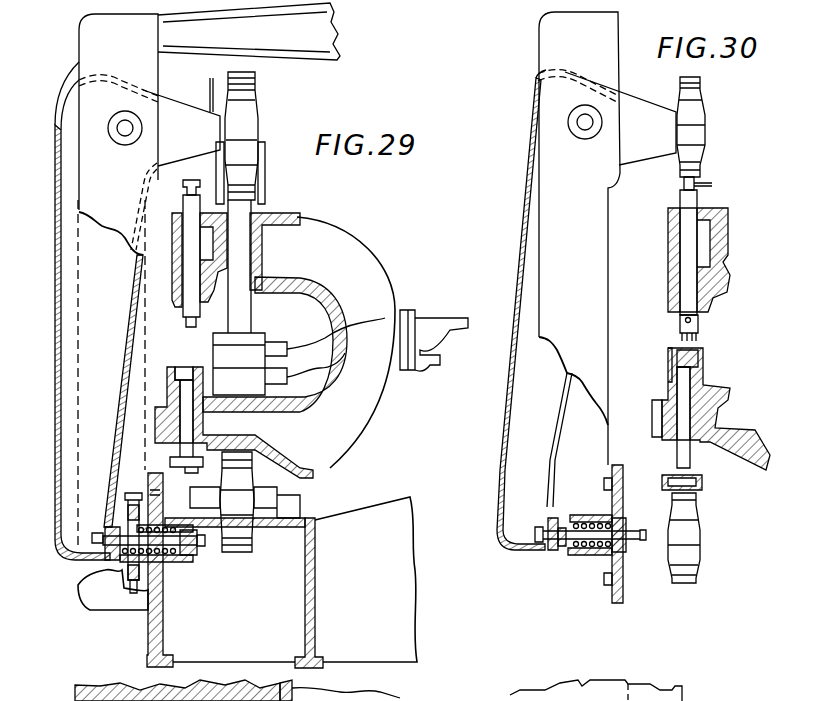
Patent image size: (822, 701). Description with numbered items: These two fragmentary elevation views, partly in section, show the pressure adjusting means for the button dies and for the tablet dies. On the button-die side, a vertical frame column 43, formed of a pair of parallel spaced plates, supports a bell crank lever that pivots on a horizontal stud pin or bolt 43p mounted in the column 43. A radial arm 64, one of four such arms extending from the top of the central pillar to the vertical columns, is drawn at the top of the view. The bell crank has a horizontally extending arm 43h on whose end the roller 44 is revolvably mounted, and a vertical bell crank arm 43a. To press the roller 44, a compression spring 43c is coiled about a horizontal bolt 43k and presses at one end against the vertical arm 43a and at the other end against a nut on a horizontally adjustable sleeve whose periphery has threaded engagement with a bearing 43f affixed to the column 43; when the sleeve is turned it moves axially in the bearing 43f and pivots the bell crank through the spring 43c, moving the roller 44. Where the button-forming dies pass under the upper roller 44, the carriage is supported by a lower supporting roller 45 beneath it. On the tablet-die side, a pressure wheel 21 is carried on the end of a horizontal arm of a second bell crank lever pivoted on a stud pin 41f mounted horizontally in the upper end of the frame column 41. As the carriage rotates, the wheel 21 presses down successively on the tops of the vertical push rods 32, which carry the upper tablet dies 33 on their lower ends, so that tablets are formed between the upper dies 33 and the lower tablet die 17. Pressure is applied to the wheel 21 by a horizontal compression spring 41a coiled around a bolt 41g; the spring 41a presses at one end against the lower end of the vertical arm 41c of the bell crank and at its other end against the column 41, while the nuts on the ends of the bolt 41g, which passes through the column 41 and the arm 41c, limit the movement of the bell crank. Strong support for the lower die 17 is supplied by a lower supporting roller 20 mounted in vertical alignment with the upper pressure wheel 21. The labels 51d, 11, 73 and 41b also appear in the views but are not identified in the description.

In FIG. 29, the column 43 is at (95, 40).
In FIG. 29, the vertical bell crank arm 43a is at (56, 308).
In FIG. 29, the horizontal stud pin or bolt 43p is at (117, 128).
In FIG. 29, the horizontally extending arm 43h is at (170, 110).
In FIG. 29, the radial arm 64 is at (330, 32).
In FIG. 29, the roller 44 is at (243, 118).
In FIG. 29, the lower supporting roller 45 is at (240, 555).
In FIG. 29, the bearing 43f is at (162, 605).
In FIG. 29, the horizontal bolt 43k is at (110, 560).
In FIG. 29, the compression spring 43c is at (172, 563).
In FIG. 30, the frame column 41 is at (550, 32).
In FIG. 30, the vertical arm 41c is at (505, 406).
In FIG. 30, the stud pin 41f is at (588, 128).
In FIG. 30, the cam lug 51d is at (648, 115).
In FIG. 30, the pressure wheel 21 is at (690, 108).
In FIG. 30, the vertical push rods 32 is at (690, 251).
In FIG. 30, the upper tablet dies 33 is at (698, 327).
In FIG. 30, the lower tablet die 17 is at (700, 357).
In FIG. 30, the base body 11 is at (716, 409).
In FIG. 30, the stop block 73 is at (652, 412).
In FIG. 30, the lower supporting roller 20 is at (690, 540).
In FIG. 30, the mounting plate 41b is at (590, 560).
In FIG. 30, the compression spring 41a is at (562, 546).
In FIG. 30, the bolt 41g is at (566, 522).